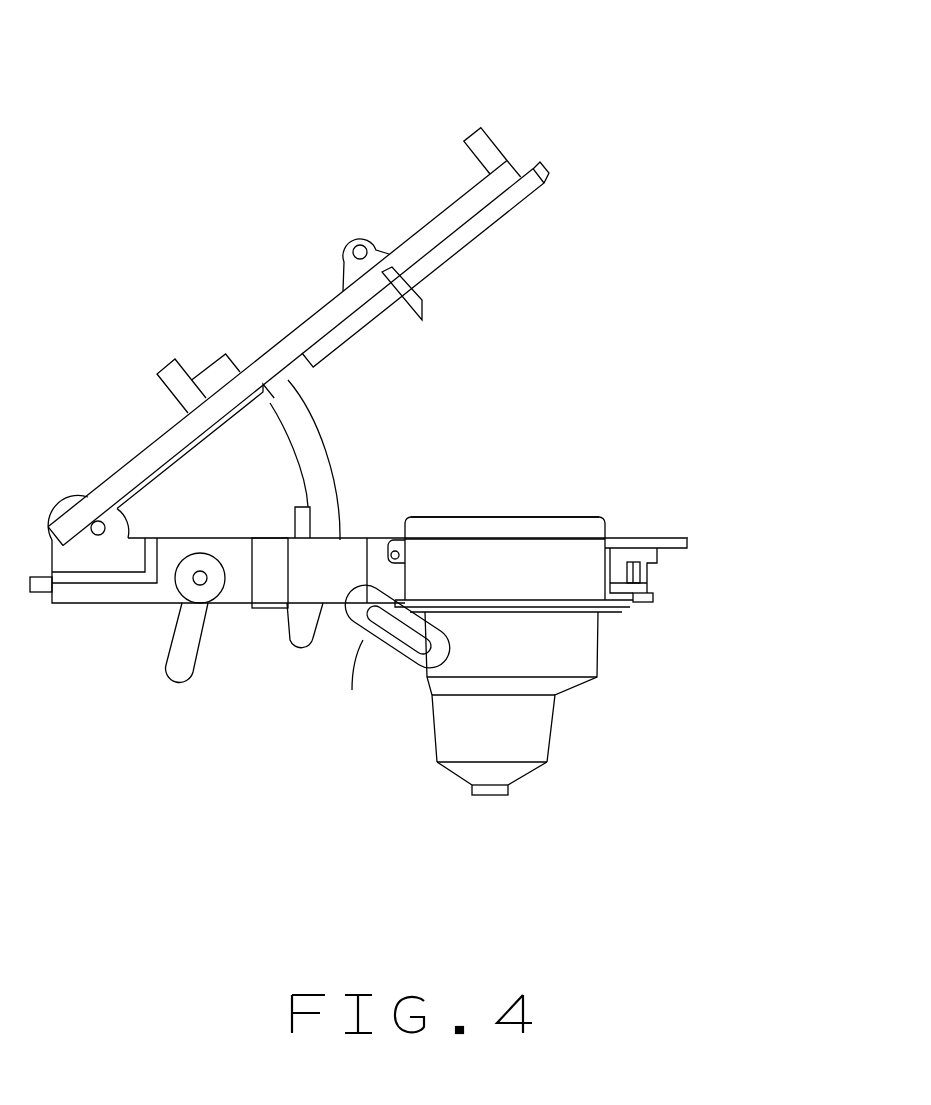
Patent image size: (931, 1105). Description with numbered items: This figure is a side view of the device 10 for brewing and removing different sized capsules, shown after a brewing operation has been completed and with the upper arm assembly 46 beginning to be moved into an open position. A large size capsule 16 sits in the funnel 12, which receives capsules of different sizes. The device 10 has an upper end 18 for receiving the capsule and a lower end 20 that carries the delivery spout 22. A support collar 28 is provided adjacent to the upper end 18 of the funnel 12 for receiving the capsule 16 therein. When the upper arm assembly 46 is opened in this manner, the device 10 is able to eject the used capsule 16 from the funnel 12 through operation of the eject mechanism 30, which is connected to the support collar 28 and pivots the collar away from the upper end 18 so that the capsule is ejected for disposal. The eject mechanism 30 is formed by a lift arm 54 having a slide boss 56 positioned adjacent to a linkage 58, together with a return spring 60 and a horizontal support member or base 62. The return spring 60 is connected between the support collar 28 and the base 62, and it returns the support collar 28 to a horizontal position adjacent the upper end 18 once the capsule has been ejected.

The device for brewing and removal of different sized capsules 10 is at (758, 504).
The funnel-like member 12 is at (622, 721).
The large size capsule 16 is at (467, 517).
The upper end 18 is at (685, 549).
The lower end 20 is at (442, 806).
The delivery spout 22 is at (488, 797).
The support collar 28 is at (608, 518).
The eject mechanism 30 is at (282, 727).
The upper arm assembly 46 is at (387, 170).
The lift arm 54 is at (350, 410).
The slide boss 56 is at (293, 643).
The linkage 58 is at (392, 630).
The return spring 60 is at (450, 566).
The horizontal support member or base 62 is at (180, 452).